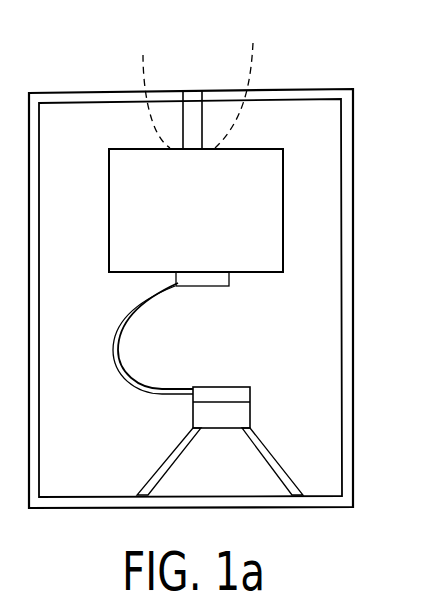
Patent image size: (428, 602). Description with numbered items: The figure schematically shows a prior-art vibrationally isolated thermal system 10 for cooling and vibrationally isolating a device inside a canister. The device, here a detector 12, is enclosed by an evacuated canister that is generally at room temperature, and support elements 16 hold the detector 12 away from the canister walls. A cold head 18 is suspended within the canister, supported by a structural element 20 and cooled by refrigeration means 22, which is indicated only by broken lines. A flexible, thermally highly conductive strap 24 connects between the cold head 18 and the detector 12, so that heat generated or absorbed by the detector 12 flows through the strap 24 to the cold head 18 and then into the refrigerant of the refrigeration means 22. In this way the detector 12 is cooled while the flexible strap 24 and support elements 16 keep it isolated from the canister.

The vibrationally isolated thermal system 10 is at (337, 72).
The detector 12 is at (240, 413).
The support elements 16 is at (170, 468).
The cold head 18 is at (265, 215).
The structural element 20 is at (192, 127).
The refrigeration means 22 is at (254, 61).
The flexible thermally highly conductive strap 24 is at (122, 338).